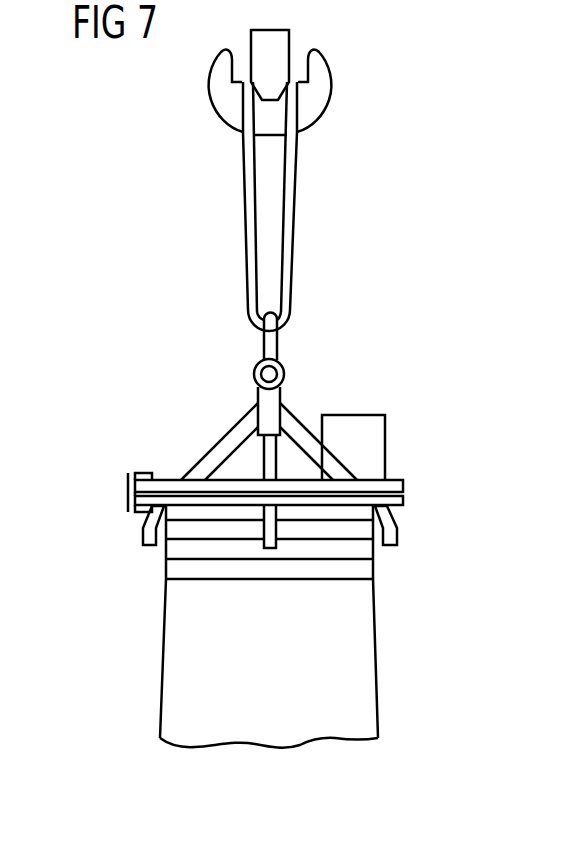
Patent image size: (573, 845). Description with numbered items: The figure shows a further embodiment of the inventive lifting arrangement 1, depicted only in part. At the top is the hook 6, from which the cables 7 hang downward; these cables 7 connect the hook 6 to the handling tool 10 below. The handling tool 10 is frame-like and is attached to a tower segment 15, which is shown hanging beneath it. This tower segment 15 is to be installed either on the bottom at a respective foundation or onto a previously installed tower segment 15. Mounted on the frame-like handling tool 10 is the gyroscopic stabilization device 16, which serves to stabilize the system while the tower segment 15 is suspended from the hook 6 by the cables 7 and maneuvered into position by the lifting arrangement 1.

The lifting arrangement 1 is at (457, 243).
The hook 6 is at (315, 96).
The cables 7 is at (243, 216).
The handling tool 10 is at (128, 493).
The tower segment 15 is at (363, 661).
The gyroscopic stabilization device 16 is at (388, 445).